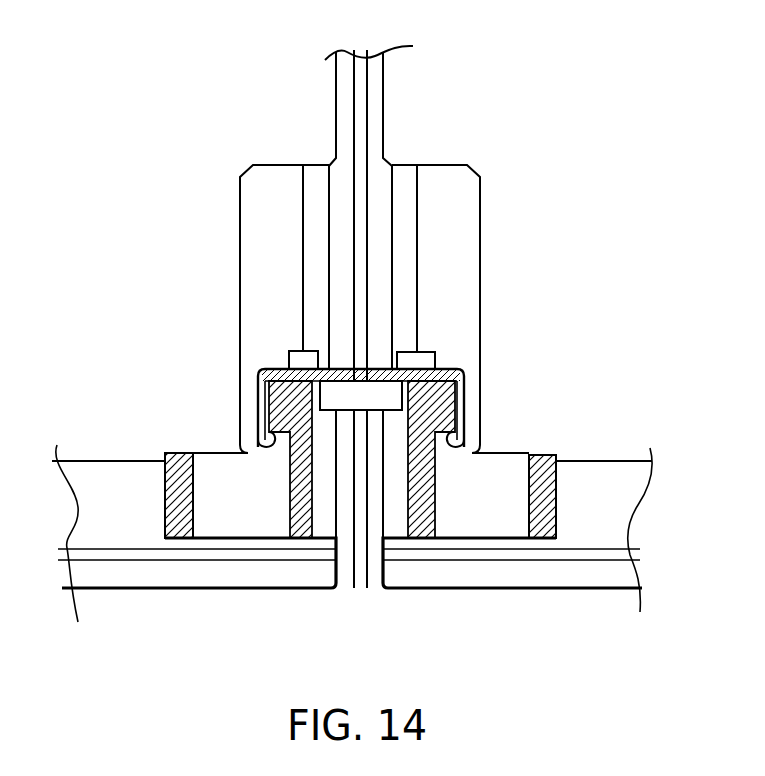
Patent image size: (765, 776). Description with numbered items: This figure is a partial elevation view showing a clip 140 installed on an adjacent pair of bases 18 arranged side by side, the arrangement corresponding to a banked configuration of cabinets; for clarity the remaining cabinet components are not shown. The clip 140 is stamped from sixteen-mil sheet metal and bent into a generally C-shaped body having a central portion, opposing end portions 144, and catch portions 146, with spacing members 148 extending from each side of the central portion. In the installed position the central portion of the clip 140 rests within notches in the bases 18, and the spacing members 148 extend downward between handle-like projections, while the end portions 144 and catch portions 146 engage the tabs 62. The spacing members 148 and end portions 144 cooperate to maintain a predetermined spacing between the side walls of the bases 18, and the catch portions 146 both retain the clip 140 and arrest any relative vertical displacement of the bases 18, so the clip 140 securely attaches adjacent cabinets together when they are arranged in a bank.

The base 18 is at (329, 590).
The tab 62 is at (262, 392).
The clip 140 is at (272, 371).
The end portion 144 is at (258, 422).
The catch portion 146 is at (288, 432).
The spacing member 148 is at (385, 395).